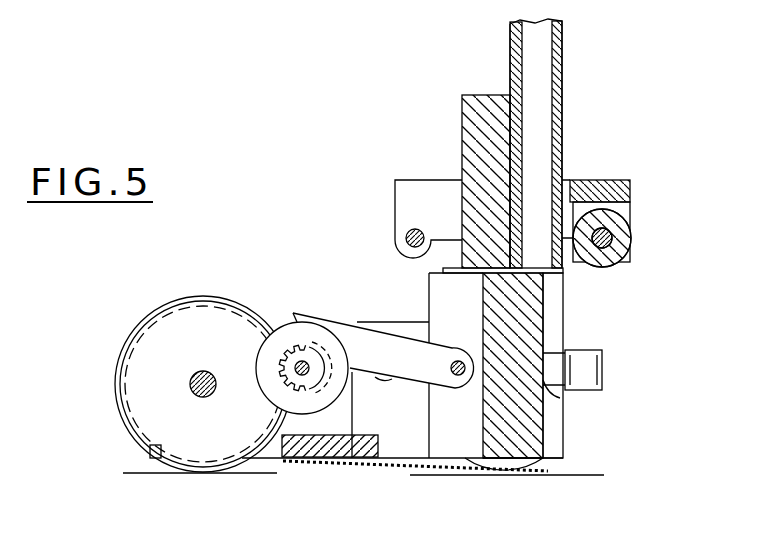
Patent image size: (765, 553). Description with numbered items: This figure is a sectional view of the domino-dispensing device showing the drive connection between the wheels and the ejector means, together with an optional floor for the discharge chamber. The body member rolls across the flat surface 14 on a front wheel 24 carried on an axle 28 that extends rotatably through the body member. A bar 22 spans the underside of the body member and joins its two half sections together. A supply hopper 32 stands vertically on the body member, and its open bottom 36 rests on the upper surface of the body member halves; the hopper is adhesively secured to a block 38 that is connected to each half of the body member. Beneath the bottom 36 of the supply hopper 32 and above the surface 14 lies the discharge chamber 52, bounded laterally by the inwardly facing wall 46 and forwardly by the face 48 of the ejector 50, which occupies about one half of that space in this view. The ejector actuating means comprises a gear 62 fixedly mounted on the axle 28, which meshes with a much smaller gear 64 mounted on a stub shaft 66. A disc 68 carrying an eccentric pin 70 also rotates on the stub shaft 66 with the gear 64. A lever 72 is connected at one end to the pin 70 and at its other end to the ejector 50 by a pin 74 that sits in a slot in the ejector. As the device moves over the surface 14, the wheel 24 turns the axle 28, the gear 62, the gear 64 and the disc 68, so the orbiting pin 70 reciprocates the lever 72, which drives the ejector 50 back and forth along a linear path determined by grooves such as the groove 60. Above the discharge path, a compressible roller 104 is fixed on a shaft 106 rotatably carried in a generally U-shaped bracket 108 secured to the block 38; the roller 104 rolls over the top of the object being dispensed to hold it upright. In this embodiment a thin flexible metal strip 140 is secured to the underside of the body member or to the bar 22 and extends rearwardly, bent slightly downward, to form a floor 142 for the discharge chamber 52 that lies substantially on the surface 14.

The flat surface 14 is at (150, 472).
The bar 22 is at (310, 460).
The front wheel 24 is at (136, 327).
The axle 28 is at (196, 393).
The supply hopper 32 is at (562, 46).
The bottom of the supply hopper 36 is at (553, 266).
The block 38 is at (462, 120).
The inwardly facing wall 46 is at (553, 298).
The face of the ejector 48 is at (545, 422).
The ejector 50 is at (530, 440).
The discharge chamber 52 is at (553, 340).
The groove 60 is at (548, 390).
The gear 62 is at (195, 303).
The gear 64 is at (292, 345).
The stub shaft 66 is at (310, 372).
The disc 68 is at (335, 332).
The eccentric pin 70 is at (313, 340).
The lever 72 is at (440, 342).
The pin 74 is at (458, 376).
The roller 104 is at (631, 240).
The shaft 106 is at (611, 241).
The bracket 108 is at (600, 178).
The strip 140 is at (347, 463).
The floor 142 is at (510, 474).